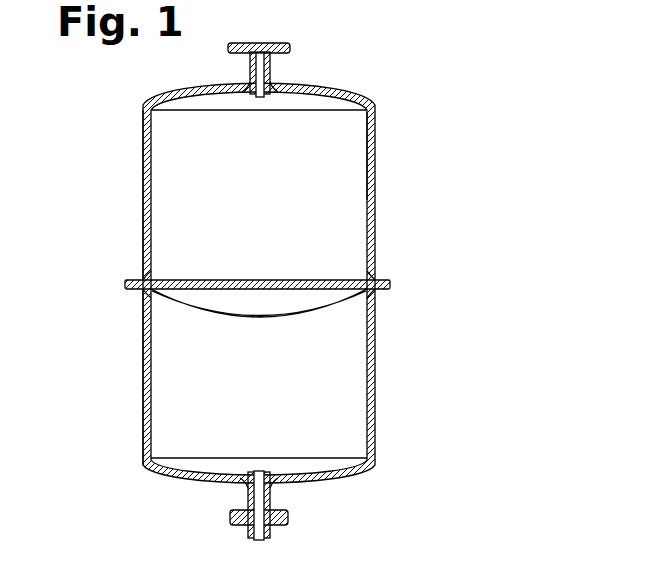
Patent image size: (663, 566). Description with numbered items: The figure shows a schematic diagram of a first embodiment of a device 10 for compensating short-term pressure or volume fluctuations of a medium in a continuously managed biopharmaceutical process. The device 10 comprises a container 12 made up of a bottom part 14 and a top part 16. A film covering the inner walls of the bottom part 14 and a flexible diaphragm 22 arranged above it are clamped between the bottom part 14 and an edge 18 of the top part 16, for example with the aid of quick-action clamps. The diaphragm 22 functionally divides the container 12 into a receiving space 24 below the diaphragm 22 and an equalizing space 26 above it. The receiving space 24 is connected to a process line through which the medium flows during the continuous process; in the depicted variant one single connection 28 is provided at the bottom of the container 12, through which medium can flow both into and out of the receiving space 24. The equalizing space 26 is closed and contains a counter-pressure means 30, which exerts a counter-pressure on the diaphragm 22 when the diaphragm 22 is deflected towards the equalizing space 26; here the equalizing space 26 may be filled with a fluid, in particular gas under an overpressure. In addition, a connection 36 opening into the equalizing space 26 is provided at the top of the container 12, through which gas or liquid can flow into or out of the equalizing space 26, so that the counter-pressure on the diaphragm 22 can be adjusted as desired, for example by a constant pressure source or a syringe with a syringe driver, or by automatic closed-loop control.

The device 10 is at (398, 75).
The container 12 is at (378, 203).
The bottom part 14 is at (143, 349).
The top part 16 is at (143, 173).
The edge 18 is at (383, 278).
The flexible diaphragm 22 is at (338, 310).
The receiving space 24 is at (241, 395).
The equalizing space 26 is at (241, 203).
The connection 28 is at (248, 490).
The counter-pressure means 30 is at (352, 136).
The connection 36 is at (278, 70).